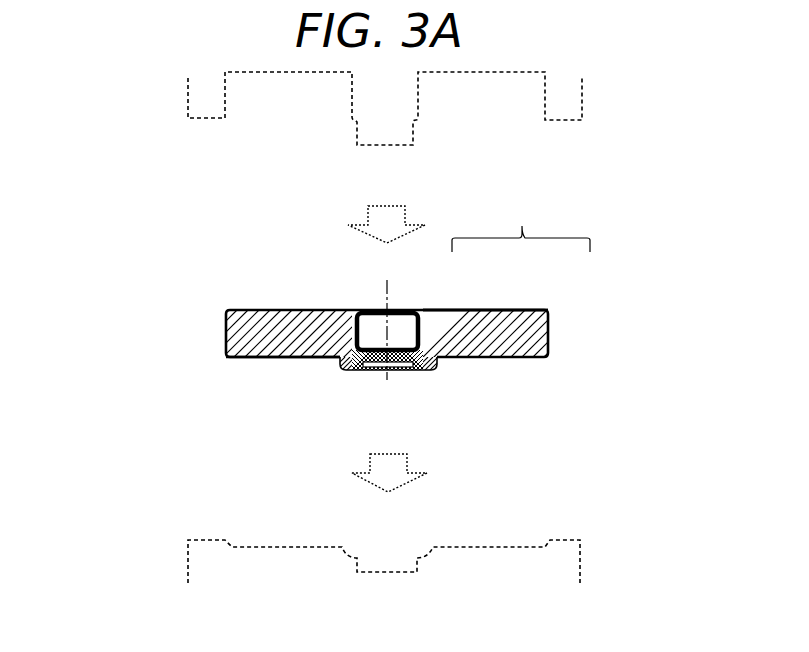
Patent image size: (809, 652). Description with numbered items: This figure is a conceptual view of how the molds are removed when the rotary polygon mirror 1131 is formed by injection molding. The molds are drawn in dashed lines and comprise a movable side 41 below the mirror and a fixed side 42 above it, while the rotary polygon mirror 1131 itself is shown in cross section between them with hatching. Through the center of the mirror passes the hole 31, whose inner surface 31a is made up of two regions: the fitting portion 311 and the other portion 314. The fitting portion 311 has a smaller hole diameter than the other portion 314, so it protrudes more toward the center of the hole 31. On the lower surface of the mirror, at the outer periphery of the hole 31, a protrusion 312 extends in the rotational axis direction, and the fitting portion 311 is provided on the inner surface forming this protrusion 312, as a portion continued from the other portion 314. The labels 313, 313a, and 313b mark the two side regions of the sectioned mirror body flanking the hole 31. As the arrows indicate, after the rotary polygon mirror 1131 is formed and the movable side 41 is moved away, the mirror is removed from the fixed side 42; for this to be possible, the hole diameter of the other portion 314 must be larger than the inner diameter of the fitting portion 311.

The fixed side 42 is at (200, 95).
The movable side 41 is at (210, 567).
The hole 31 is at (388, 307).
The inner surface 31a is at (506, 252).
The other portion 314 is at (438, 308).
The fitting portion 311 is at (485, 308).
The protrusion 312 is at (340, 370).
The side portions 313 is at (388, 340).
The left side portion 313a is at (225, 328).
The right side portion 313b is at (548, 328).
The rotary polygon mirror 1131 is at (226, 350).